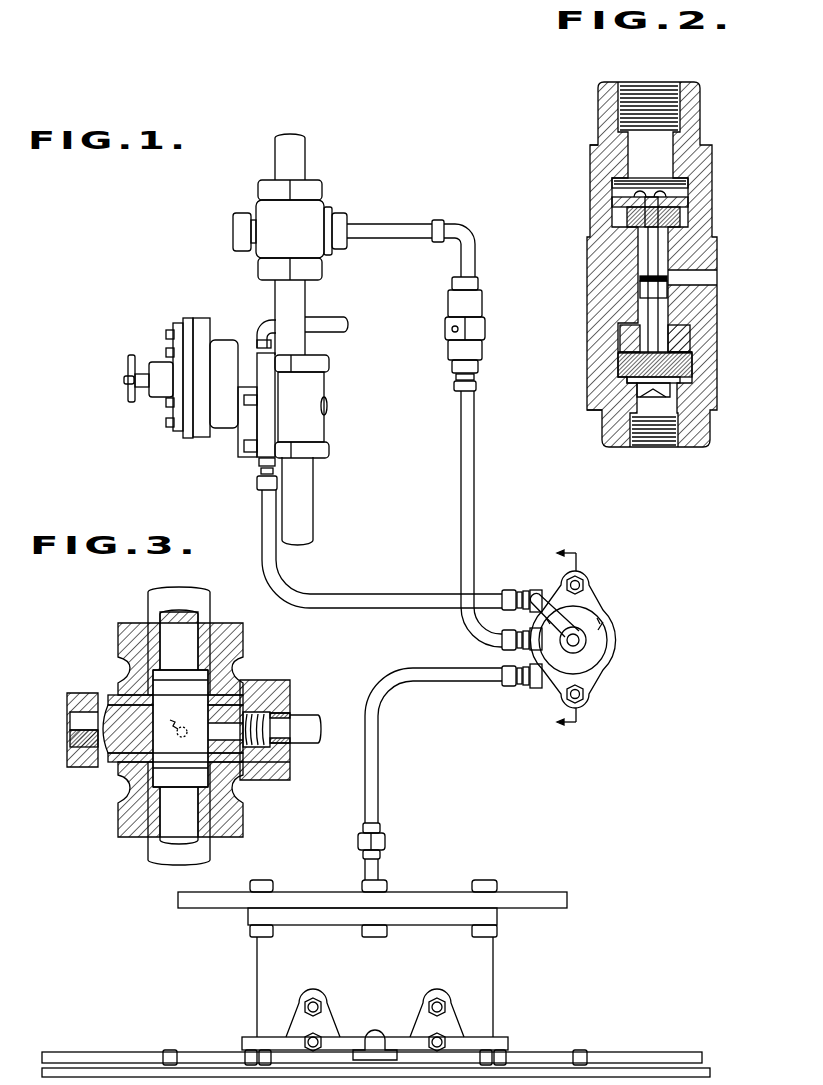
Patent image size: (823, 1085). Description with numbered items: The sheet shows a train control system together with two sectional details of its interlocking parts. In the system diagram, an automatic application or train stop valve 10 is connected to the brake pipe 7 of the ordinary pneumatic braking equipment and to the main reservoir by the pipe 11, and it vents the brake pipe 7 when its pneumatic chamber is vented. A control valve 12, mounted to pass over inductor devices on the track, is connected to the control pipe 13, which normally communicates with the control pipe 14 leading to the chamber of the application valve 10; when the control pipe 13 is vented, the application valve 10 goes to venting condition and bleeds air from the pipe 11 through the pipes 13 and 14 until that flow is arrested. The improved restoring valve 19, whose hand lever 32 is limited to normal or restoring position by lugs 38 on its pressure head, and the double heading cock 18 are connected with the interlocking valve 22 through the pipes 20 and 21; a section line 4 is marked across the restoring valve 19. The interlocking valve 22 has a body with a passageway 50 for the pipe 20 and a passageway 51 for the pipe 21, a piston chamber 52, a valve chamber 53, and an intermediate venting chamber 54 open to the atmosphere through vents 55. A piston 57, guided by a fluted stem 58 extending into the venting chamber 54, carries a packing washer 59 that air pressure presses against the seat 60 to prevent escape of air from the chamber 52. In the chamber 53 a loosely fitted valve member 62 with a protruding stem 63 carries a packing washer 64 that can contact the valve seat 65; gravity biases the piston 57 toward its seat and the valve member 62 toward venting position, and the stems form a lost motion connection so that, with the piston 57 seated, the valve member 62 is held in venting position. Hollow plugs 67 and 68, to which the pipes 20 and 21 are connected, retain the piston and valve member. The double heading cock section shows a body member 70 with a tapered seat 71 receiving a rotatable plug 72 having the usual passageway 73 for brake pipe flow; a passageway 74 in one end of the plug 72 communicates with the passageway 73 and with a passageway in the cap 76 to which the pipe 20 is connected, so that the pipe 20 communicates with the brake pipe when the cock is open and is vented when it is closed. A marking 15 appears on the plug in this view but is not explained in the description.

In FIG. 1, the section line 4- 4 is at (573, 640).
In FIG. 1, the brake pipe 7 is at (303, 495).
In FIG. 3, the brake pipe 7 is at (162, 849).
In FIG. 1, the automatic application or train stop valve 10 is at (226, 404).
In FIG. 1, the main reservoir pipe 11 is at (331, 320).
In FIG. 1, the control valve 12 is at (426, 977).
In FIG. 1, the control pipe 13 is at (373, 746).
In FIG. 1, the control pipe 14 is at (394, 601).
In FIG. 3, the port 15 is at (180, 728).
In FIG. 1, the double heading cock 18 is at (300, 235).
In FIG. 3, the double heading cock 18 is at (114, 648).
In FIG. 1, the restoring valve 19 is at (559, 639).
In FIG. 1, the pipe 20 is at (396, 229).
In FIG. 3, the pipe 20 is at (310, 723).
In FIG. 1, the pipe 21 is at (476, 460).
In FIG. 1, the interlocking valve 22 is at (474, 313).
In FIG. 1, the hand lever 32 is at (541, 598).
In FIG. 1, the lugs 38 is at (606, 633).
In FIG. 2, the passageway 50 is at (657, 96).
In FIG. 2, the passageway 51 is at (665, 440).
In FIG. 2, the piston chamber or cylinder 52 is at (690, 197).
In FIG. 2, the valve chamber 53 is at (686, 342).
In FIG. 2, the intermediate venting chamber 54 is at (645, 289).
In FIG. 2, the vents 55 is at (705, 278).
In FIG. 2, the piston 57 is at (690, 209).
In FIG. 2, the fluted stem 58 is at (660, 251).
In FIG. 2, the packing washer 59 is at (690, 226).
In FIG. 2, the seat 60 is at (626, 228).
In FIG. 2, the valve member 62 is at (635, 376).
In FIG. 2, the protruding stem 63 is at (640, 350).
In FIG. 2, the packing washer 64 is at (700, 366).
In FIG. 2, the valve seat 65 is at (642, 338).
In FIG. 2, the hollow plug 67 is at (600, 102).
In FIG. 2, the hollow plug 68 is at (601, 430).
In FIG. 3, the body member 70 is at (126, 816).
In FIG. 3, the tapered seat 71 is at (130, 702).
In FIG. 3, the rotatable plug 72 is at (116, 746).
In FIG. 3, the passageway 73 is at (224, 698).
In FIG. 3, the passageway 74 is at (262, 712).
In FIG. 3, the cap 76 is at (282, 766).